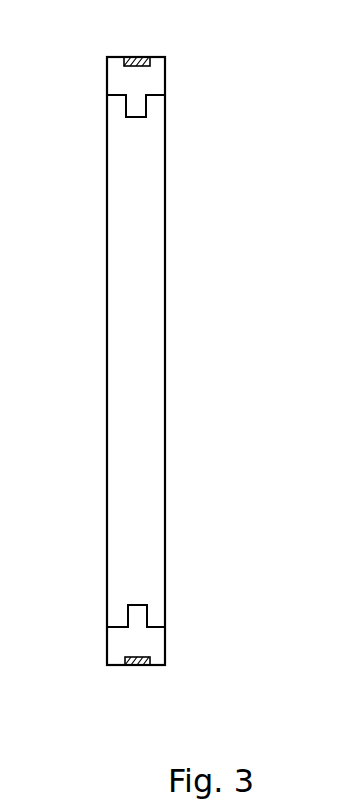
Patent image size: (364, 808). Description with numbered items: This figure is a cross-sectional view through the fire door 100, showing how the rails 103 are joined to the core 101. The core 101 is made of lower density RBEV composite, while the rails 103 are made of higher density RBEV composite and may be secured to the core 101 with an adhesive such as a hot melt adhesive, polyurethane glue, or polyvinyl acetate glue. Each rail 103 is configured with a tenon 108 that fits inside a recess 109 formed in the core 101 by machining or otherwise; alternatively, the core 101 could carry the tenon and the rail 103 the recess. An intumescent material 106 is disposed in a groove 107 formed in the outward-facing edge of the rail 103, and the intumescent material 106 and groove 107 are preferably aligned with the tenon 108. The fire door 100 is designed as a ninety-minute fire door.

The fire door 100 is at (131, 389).
The core 101 is at (125, 323).
The rail 103 is at (155, 73).
The intumescent material 106 is at (135, 57).
The groove 107 is at (146, 79).
The tenon 108 is at (138, 103).
The recess 109 is at (136, 124).